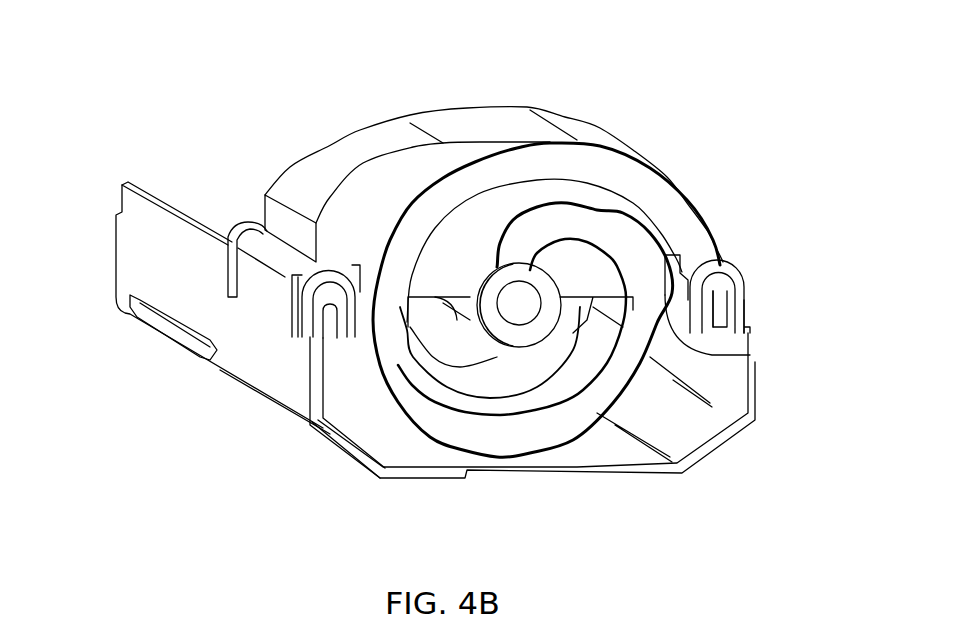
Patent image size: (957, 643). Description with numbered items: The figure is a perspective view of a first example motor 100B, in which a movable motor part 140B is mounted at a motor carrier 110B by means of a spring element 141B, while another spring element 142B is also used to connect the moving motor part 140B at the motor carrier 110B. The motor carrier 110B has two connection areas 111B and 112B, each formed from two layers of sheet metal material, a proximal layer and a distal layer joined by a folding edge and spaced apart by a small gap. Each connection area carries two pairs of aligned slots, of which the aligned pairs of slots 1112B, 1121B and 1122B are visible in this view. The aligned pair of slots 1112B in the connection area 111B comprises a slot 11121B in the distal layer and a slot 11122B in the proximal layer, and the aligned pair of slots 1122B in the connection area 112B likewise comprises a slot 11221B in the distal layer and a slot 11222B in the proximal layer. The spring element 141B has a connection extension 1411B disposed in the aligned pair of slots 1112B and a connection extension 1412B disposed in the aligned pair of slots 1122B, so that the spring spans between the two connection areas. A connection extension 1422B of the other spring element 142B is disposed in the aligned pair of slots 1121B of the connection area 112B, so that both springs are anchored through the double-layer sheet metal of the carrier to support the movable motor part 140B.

The motor 100B is at (790, 70).
The motor carrier 110B is at (718, 445).
The connection area 111B is at (743, 310).
The aligned pair of slots 1112B is at (736, 257).
The slot 11121B is at (763, 293).
The slot 11122B is at (669, 308).
The connection area 112B is at (235, 216).
The aligned pair of slots 1121B is at (254, 219).
The aligned pair of slots 1122B is at (327, 257).
The slot 11221B is at (323, 300).
The slot 11222B is at (340, 295).
The movable motor part 140B is at (510, 130).
The spring element 141B is at (680, 202).
The connection extension 1411B is at (733, 272).
The connection extension 1412B is at (302, 311).
The spring element 142B is at (478, 107).
The connection extension 1422B is at (222, 276).